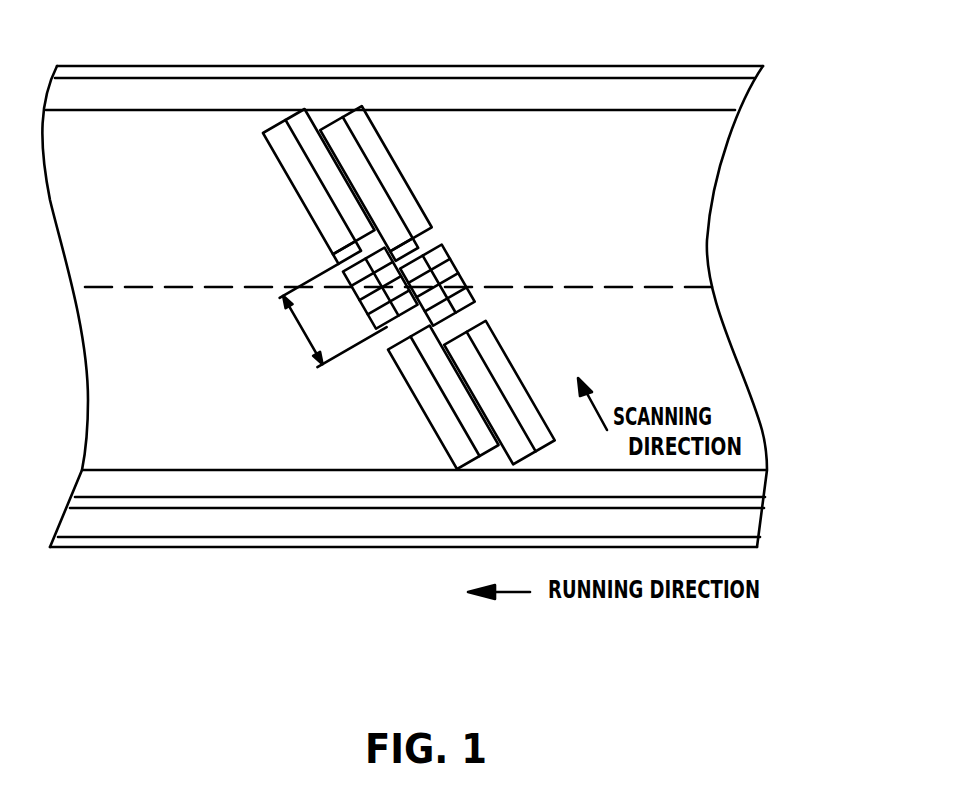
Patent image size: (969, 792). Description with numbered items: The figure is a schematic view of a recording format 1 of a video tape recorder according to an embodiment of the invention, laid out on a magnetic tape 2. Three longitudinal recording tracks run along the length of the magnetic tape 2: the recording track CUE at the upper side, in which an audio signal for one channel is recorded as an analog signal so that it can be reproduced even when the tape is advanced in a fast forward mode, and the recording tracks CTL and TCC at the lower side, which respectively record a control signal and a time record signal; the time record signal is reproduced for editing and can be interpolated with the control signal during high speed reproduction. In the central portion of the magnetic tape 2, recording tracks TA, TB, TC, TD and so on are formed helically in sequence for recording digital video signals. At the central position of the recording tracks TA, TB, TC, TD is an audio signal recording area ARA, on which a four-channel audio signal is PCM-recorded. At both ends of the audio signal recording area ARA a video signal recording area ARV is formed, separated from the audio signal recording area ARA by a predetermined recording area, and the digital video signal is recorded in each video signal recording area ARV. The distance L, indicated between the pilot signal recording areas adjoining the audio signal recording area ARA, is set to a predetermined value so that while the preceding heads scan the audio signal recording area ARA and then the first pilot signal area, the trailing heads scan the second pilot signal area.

The recording format 1 is at (695, 626).
The magnetic tape 2 is at (712, 67).
The recording track CUE is at (638, 88).
The recording track CTL is at (92, 487).
The recording track TCC is at (200, 523).
The recording track TA is at (279, 131).
The recording track TB is at (303, 128).
The recording track TC is at (333, 135).
The recording track TD is at (370, 142).
The video signal recording area ARV is at (438, 245).
The audio signal recording area ARA is at (438, 259).
The distance L is at (332, 313).